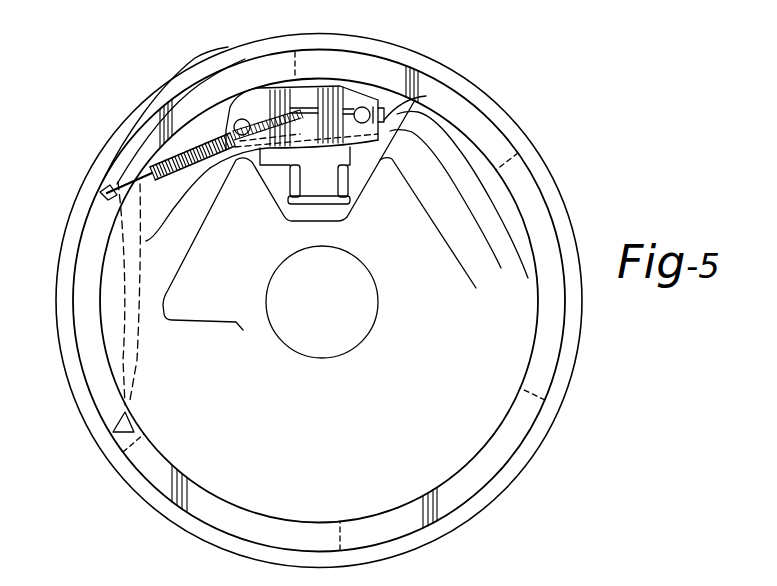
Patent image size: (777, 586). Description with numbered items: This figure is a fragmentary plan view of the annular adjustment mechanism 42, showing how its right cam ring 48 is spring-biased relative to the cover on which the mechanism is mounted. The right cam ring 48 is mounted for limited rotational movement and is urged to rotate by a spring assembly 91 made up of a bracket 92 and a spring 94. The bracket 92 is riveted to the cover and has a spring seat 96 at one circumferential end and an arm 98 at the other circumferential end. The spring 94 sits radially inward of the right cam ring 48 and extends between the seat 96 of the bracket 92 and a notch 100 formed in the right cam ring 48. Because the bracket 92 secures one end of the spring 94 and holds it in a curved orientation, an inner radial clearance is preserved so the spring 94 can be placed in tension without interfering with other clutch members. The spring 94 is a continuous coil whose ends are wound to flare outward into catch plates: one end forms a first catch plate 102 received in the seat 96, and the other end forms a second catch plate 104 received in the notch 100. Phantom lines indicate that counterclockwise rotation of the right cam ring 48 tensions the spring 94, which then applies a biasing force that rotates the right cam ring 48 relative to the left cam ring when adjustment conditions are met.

The adjustment mechanism 42 is at (63, 392).
The right cam ring 48 is at (97, 160).
The spring assembly 91 is at (372, 150).
The bracket 92 is at (307, 100).
The spring 94 is at (193, 137).
The spring seat 96 is at (380, 110).
The arm 98 is at (161, 208).
The notch 100 is at (106, 184).
The first catch plate 102 is at (397, 106).
The second catch plate 104 is at (118, 182).